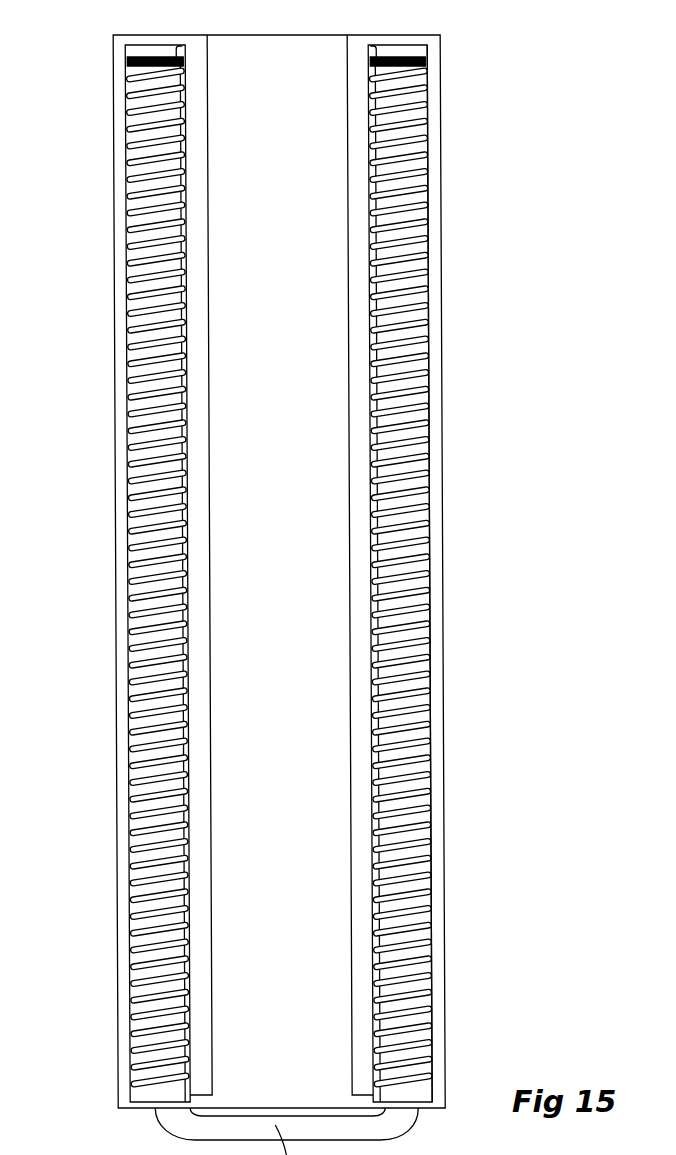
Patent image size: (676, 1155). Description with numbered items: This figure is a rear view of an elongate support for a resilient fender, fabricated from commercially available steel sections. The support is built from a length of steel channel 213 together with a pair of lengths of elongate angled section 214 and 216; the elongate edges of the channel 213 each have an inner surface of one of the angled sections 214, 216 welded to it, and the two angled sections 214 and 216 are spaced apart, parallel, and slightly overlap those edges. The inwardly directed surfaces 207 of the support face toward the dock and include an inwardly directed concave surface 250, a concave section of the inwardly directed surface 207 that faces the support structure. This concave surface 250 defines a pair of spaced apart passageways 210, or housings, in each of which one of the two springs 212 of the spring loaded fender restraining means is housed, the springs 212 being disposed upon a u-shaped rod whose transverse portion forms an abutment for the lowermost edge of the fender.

The inwardly directed surfaces 207 is at (327, 447).
The spaced apart passageways 210 is at (147, 46).
The springs 212 is at (143, 498).
The steel channel 213 is at (242, 357).
The elongate angled section 214 is at (436, 332).
The elongate angled section 216 is at (116, 296).
The inwardly directed concave surface 250 is at (128, 160).